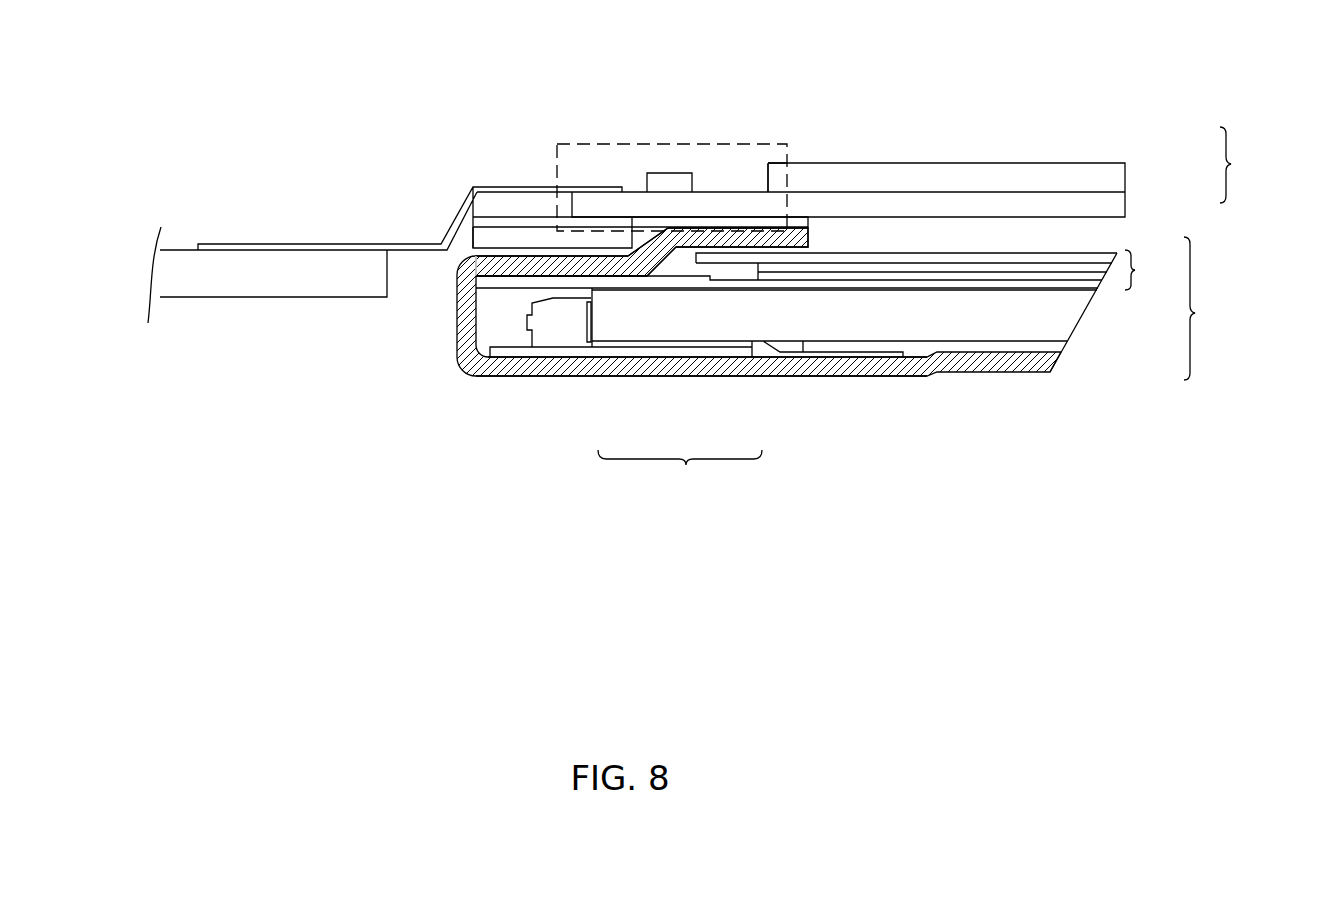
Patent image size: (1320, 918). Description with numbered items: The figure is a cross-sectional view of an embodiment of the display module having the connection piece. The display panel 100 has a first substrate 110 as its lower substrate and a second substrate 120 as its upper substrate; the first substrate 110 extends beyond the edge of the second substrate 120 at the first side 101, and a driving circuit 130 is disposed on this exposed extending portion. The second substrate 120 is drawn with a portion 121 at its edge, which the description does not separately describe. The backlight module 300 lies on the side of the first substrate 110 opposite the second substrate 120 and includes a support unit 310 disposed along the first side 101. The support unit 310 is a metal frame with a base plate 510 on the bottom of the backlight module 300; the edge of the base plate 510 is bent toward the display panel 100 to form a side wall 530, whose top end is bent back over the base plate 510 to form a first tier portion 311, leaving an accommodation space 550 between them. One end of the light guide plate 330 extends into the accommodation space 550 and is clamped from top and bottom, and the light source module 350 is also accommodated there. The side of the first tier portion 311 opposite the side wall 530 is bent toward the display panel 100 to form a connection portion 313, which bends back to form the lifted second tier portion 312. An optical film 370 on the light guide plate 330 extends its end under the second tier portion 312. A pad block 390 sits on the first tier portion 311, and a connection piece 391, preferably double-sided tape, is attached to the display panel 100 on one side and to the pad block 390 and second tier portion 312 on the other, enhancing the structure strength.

The display panel 100 is at (875, 165).
The first substrate 110 is at (1113, 207).
The second substrate 120 is at (1113, 172).
The protruding portion of second substrate 121 is at (767, 170).
The driving circuit 130 is at (667, 185).
The first side 101 is at (580, 144).
The backlight module 300 is at (1145, 308).
The support unit 310 is at (642, 362).
The first tier portion 311 is at (620, 265).
The second tier portion 312 is at (738, 238).
The connection portion 313 is at (658, 248).
The light guide plate 330 is at (1008, 320).
The light source module 350 is at (572, 325).
The optical film 370 is at (828, 270).
The pad block 390 is at (494, 237).
The connection piece 391 is at (512, 223).
The base plate 510 is at (528, 367).
The side wall 530 is at (458, 322).
The accommodation space 550 is at (499, 308).